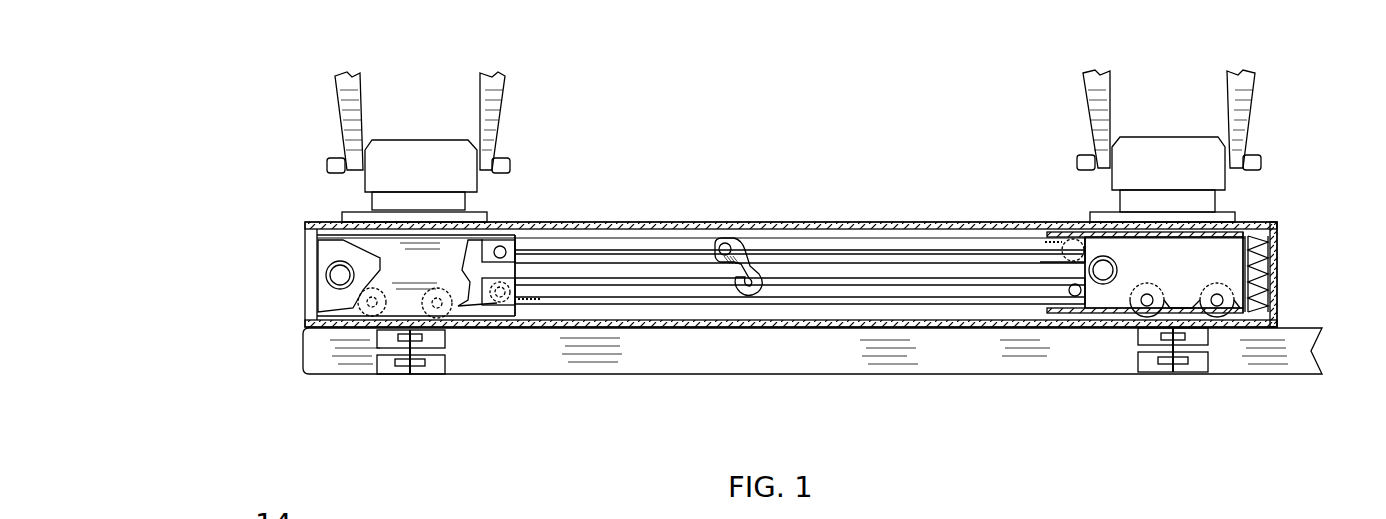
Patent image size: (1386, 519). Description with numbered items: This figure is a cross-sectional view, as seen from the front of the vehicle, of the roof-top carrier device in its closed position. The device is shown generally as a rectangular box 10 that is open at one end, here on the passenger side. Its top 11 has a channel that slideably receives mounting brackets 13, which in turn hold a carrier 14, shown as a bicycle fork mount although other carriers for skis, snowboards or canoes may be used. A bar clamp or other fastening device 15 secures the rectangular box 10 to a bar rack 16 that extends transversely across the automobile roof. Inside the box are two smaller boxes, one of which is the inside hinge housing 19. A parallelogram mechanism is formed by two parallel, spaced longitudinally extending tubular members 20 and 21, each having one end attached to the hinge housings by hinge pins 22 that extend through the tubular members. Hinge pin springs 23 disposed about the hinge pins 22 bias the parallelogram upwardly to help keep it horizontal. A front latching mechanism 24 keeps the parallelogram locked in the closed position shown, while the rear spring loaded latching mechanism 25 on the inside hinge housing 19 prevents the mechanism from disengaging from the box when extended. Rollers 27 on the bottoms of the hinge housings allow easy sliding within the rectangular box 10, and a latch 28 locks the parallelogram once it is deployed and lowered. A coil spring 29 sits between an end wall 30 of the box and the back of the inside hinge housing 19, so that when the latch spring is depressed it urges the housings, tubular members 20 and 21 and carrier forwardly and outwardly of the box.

The rectangular box 10 is at (927, 214).
The top 11 is at (630, 227).
The mounting brackets 13 is at (466, 208).
The carrier 14 is at (416, 140).
The bar clamp 15 is at (428, 376).
The bar rack 16 is at (738, 352).
The inside hinge housing 19 is at (1235, 246).
The longitudinally extending tubular member 20 is at (823, 250).
The longitudinally extending tubular member 21 is at (872, 298).
The hinge pins 22 is at (508, 246).
The hinge pin springs 23 is at (541, 303).
The front latching mechanism 24 is at (340, 278).
The rear spring loaded latching mechanism 25 is at (1103, 276).
The rollers 27 is at (437, 318).
The latch 28 is at (724, 238).
The coil spring 29 is at (1262, 305).
The end wall 30 is at (1271, 289).